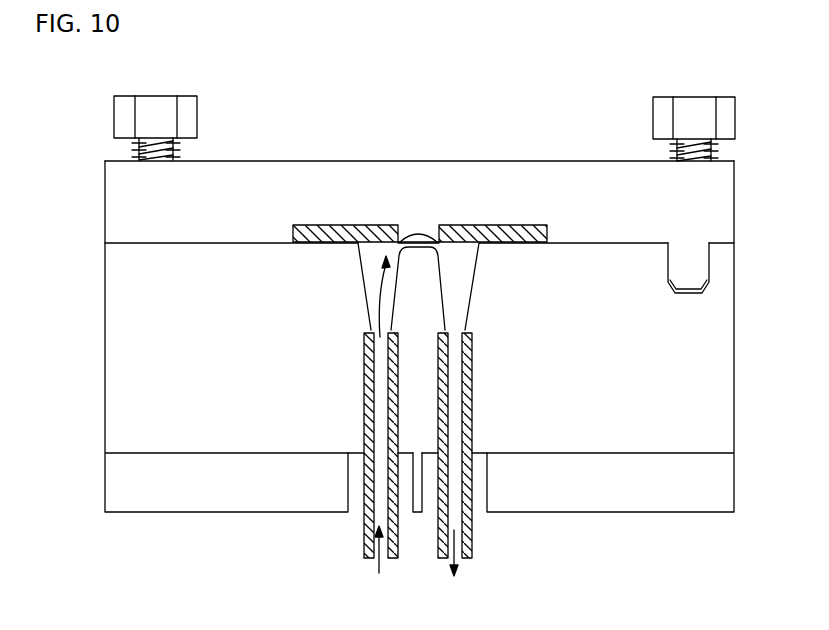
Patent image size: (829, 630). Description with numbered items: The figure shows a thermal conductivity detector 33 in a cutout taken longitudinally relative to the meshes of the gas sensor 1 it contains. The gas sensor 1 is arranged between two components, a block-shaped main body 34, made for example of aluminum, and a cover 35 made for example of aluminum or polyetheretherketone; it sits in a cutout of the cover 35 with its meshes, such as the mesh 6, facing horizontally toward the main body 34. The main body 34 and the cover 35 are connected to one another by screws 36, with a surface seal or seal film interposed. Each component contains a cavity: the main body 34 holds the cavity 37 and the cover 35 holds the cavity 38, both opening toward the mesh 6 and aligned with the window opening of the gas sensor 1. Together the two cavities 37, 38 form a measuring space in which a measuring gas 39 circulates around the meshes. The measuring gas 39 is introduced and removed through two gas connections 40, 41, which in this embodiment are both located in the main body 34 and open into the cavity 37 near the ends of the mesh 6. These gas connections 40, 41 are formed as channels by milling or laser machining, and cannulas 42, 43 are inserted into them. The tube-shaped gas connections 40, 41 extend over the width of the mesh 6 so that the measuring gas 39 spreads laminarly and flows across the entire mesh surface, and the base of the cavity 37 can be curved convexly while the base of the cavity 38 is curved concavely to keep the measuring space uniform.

The thermal conductivity detector 33 is at (448, 138).
The main body 34 is at (105, 348).
The cover 35 is at (348, 160).
The screws 36 is at (197, 117).
The gas sensor 1 is at (305, 225).
The cavity 38 is at (400, 234).
The mesh 6 is at (421, 236).
The cavity 37 is at (400, 248).
The gas connection 40 is at (364, 298).
The gas connection 41 is at (468, 305).
The cannula 42 is at (364, 537).
The cannula 43 is at (472, 545).
The measuring gas 39 is at (379, 567).